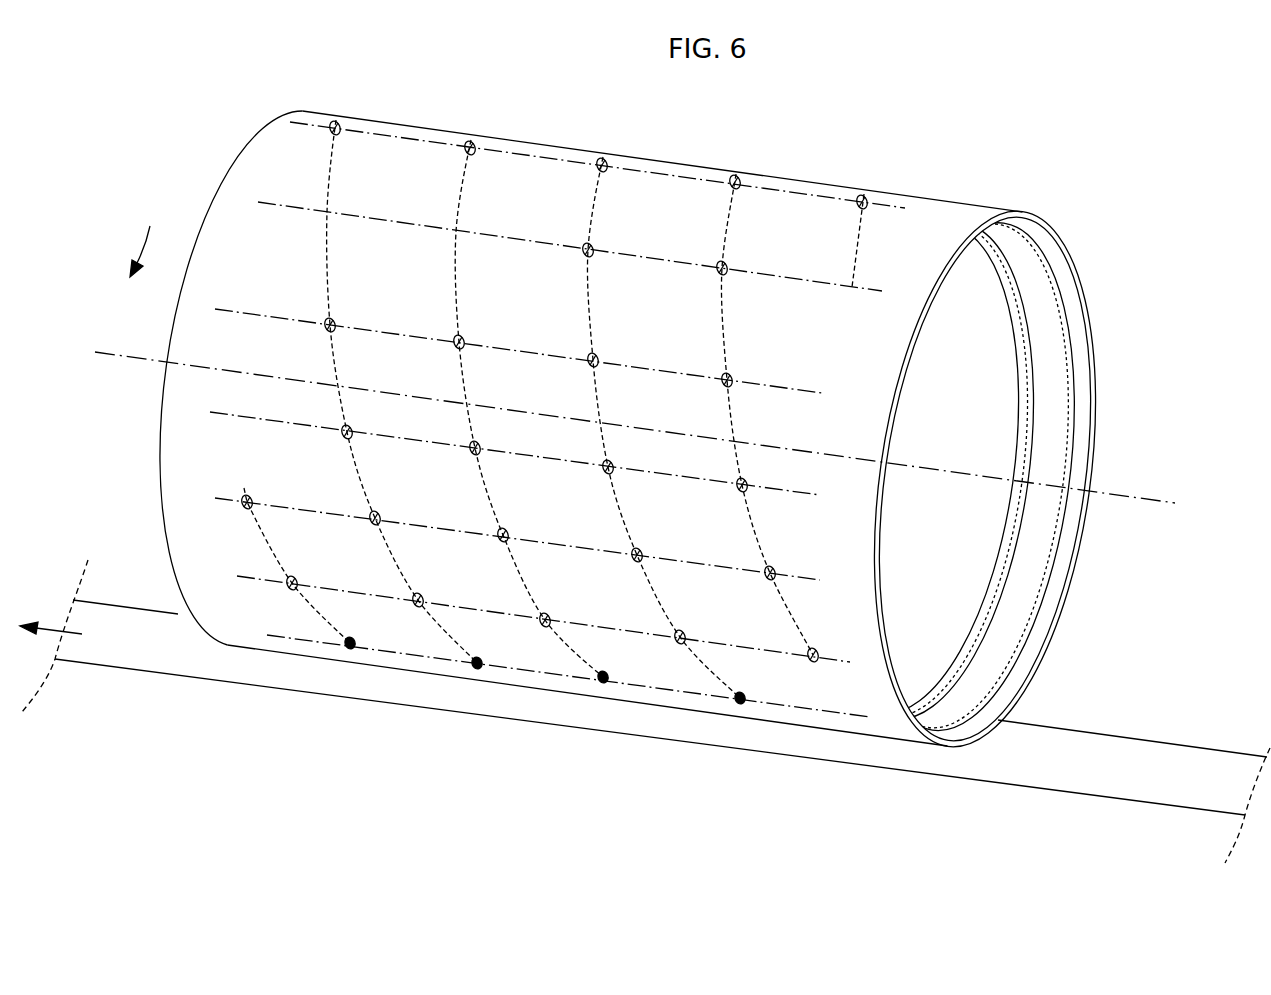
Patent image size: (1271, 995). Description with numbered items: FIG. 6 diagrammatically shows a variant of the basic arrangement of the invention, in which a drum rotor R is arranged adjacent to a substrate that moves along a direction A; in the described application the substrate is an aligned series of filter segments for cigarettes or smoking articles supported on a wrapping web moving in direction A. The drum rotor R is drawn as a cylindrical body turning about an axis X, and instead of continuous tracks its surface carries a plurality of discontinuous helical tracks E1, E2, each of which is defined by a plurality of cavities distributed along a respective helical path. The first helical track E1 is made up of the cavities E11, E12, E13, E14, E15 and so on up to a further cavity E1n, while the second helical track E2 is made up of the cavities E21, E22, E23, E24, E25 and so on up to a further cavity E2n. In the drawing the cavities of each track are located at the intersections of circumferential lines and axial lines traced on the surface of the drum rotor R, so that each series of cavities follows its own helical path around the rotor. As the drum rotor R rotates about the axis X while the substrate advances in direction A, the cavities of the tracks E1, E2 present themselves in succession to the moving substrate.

The drum rotor R is at (873, 168).
The axis of rotation X is at (945, 465).
The direction A is at (51, 614).
The discontinuous helical track E1 is at (724, 222).
The discontinuous helical track E2 is at (862, 250).
The cavity E11 is at (810, 661).
The cavity E12 is at (765, 580).
The cavity E13 is at (737, 492).
The cavity E14 is at (722, 386).
The cavity E15 is at (716, 273).
The cavity E21 is at (676, 644).
The cavity E22 is at (632, 562).
The cavity E23 is at (603, 476).
The cavity E24 is at (587, 366).
The cavity E25 is at (582, 255).
The cavity E1n is at (498, 529).
The cavity E2n is at (370, 512).